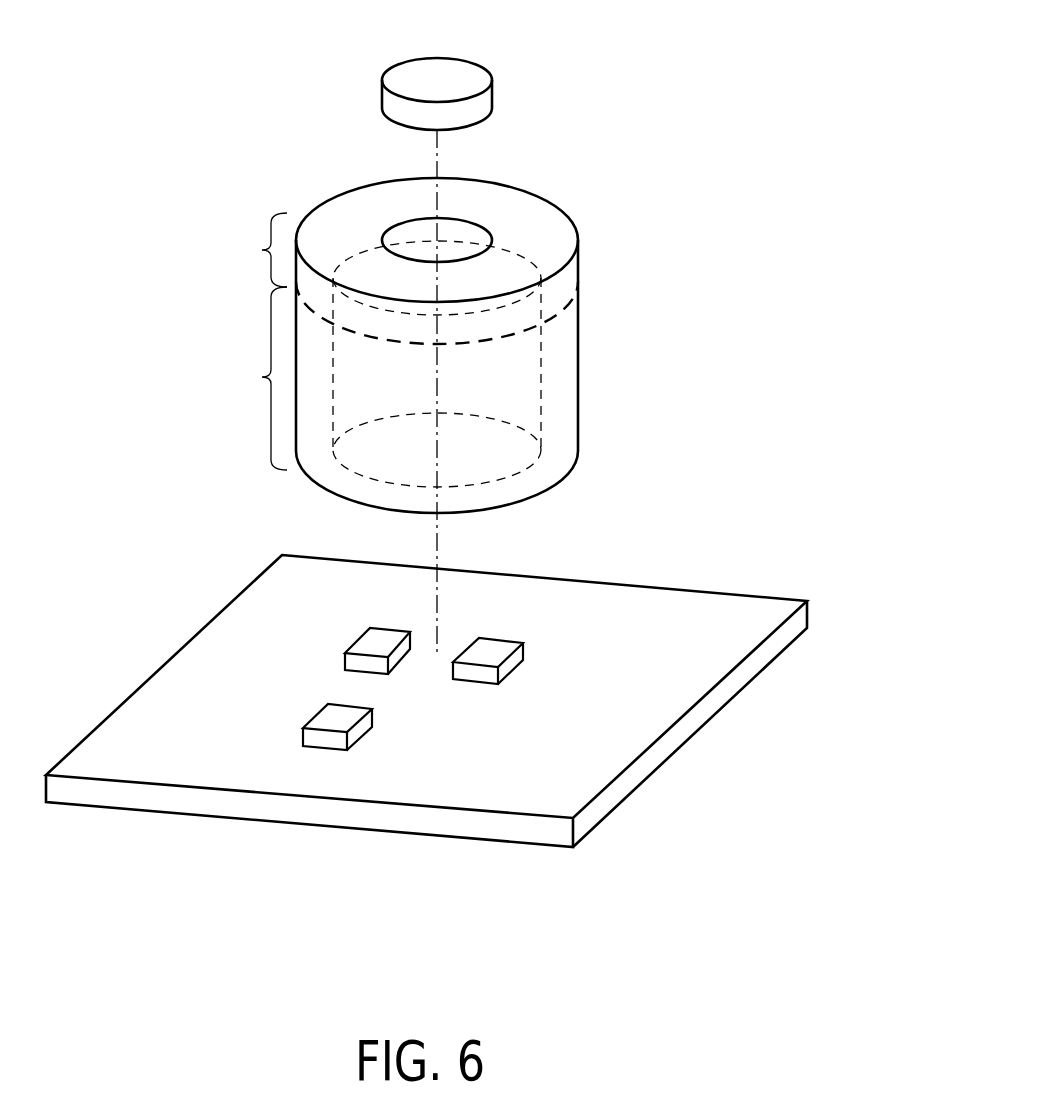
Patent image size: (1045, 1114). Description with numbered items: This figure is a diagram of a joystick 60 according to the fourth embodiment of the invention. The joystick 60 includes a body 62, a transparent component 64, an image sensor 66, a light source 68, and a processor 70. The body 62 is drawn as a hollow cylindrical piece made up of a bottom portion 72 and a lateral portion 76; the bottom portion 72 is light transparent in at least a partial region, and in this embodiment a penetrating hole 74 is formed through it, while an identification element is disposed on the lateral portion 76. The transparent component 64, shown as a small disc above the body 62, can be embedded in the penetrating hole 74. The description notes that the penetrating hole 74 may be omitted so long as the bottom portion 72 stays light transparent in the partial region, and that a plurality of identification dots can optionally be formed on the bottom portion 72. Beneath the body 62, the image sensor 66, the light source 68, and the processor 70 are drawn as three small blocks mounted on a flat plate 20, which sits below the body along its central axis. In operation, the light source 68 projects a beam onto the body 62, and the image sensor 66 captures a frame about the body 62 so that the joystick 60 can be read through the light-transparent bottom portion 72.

The joystick 60 is at (728, 69).
The body 62 is at (553, 247).
The transparent component 64 is at (462, 78).
The image sensor 66 is at (502, 648).
The light source 68 is at (373, 643).
The processor 70 is at (330, 737).
The bottom portion 72 is at (262, 250).
The penetrating hole 74 is at (405, 237).
The lateral portion 76 is at (262, 377).
The substrate 20 is at (685, 728).